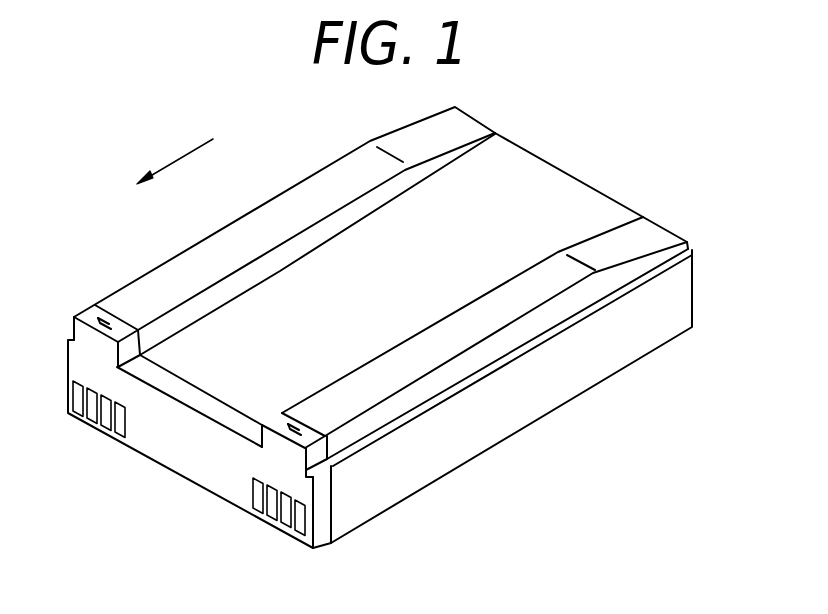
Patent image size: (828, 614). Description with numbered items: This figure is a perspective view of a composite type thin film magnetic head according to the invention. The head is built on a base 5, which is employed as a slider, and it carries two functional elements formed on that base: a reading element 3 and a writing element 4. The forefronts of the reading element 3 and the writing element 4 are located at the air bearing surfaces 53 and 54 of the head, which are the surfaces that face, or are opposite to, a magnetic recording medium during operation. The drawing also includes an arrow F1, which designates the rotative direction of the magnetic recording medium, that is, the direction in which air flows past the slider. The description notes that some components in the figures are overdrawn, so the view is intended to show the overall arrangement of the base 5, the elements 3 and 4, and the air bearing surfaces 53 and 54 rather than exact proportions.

The reading element 3 is at (102, 318).
The writing element 4 is at (108, 321).
The base 5 is at (552, 397).
The air bearing surface 53 is at (265, 222).
The air bearing surface 54 is at (418, 346).
The arrow indicating rotative direction F1 is at (182, 158).